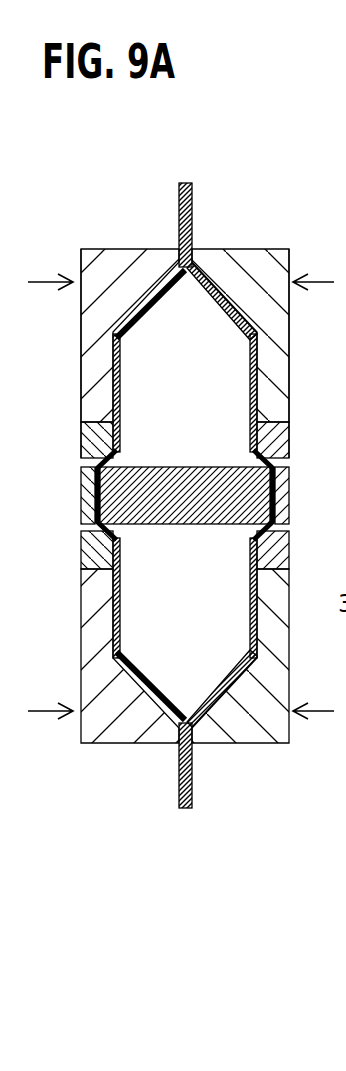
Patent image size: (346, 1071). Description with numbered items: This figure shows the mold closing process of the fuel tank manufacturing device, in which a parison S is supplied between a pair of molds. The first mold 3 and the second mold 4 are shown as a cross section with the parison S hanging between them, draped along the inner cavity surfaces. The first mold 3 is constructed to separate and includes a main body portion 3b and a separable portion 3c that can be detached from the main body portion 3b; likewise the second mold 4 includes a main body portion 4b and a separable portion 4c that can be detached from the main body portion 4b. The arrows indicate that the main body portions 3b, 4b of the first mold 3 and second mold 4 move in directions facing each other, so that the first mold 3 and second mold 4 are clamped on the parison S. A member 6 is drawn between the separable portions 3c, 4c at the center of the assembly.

The first mold 3 is at (121, 249).
The second mold 4 is at (247, 249).
The main body portion 3b is at (81, 342).
The main body portion 4b is at (289, 342).
The separable portion 3c is at (81, 442).
The separable portion 4c is at (289, 437).
The core member 6 is at (186, 467).
The parison S is at (193, 191).